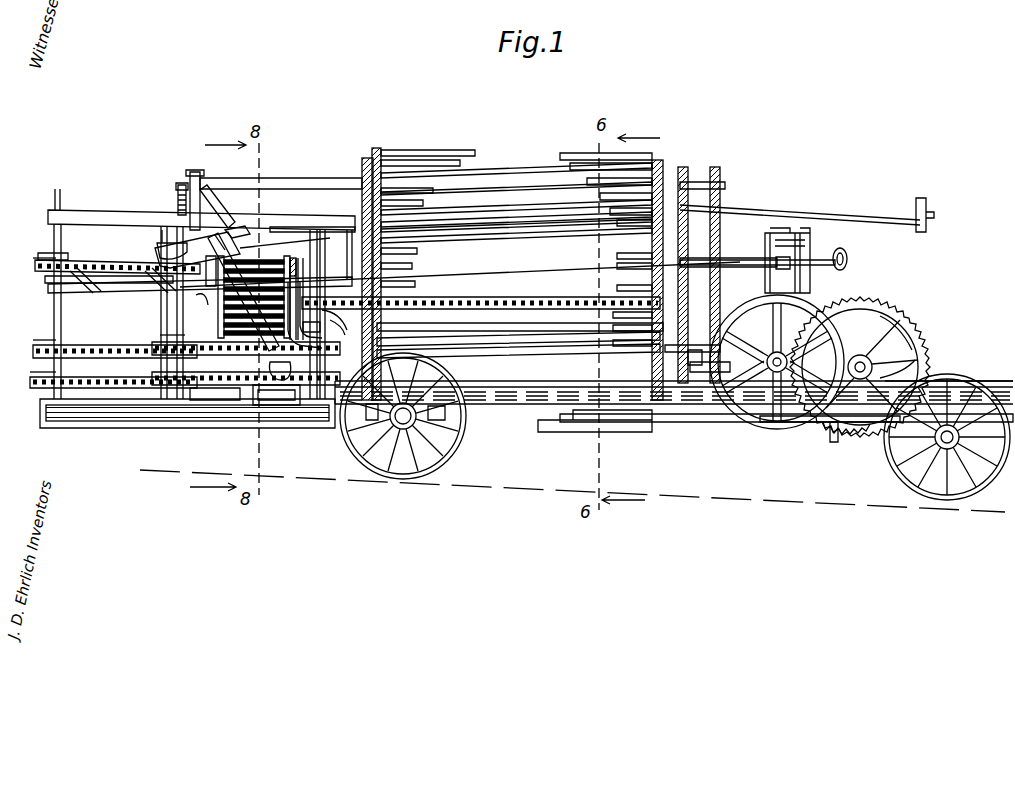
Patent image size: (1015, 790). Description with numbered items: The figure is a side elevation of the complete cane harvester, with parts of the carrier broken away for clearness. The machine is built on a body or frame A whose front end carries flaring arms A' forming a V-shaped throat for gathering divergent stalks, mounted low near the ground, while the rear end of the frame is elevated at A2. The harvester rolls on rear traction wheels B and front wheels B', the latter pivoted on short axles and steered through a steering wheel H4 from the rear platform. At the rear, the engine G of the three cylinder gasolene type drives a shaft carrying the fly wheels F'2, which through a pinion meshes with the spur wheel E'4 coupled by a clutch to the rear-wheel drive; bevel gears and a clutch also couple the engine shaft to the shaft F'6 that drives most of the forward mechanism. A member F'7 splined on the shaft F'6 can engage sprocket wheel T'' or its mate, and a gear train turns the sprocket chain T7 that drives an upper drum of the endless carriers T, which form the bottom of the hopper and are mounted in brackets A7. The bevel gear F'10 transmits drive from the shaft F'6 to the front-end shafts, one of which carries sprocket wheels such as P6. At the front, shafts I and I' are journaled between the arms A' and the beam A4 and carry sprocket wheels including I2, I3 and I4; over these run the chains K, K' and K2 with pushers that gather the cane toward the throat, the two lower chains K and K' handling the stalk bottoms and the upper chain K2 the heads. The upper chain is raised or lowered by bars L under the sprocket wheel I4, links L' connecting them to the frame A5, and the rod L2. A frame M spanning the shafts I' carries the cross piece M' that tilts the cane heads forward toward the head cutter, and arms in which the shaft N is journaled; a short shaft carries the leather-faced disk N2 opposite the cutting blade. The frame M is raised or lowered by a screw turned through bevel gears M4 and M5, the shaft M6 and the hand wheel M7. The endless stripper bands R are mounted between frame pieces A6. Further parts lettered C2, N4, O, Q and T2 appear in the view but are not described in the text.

The frame A is at (674, 416).
The flaring arms A' is at (187, 425).
The elevated rear end of frame A2 is at (990, 380).
The beam A4 is at (75, 212).
The frame A5 is at (122, 294).
The frame pieces A6 is at (302, 268).
The brackets A7 is at (362, 180).
The rear traction wheels B is at (936, 437).
The front wheels B' is at (418, 416).
The shaft eye C2 is at (776, 257).
The spur wheel E'4 is at (860, 357).
The fly wheels F'2 is at (782, 402).
The shaft F'6 is at (518, 341).
The splined clutch member F'7 is at (774, 373).
The bevel gear F'10 is at (520, 323).
The engine G is at (783, 240).
The steering wheel H4 is at (830, 442).
The shaft I is at (40, 276).
The shaft I' is at (165, 330).
The sprocket wheel I2 is at (44, 376).
The sprocket wheel I3 is at (50, 344).
The sprocket wheel I4 is at (50, 258).
The chain K is at (185, 412).
The chain K' is at (186, 340).
The upper chain K2 is at (110, 270).
The bars L is at (109, 301).
The links L' is at (123, 282).
The rod L2 is at (503, 272).
The frame M is at (197, 250).
The cross piece M' is at (163, 227).
The bevel gear M4 is at (190, 170).
The bevel gear M5 is at (210, 191).
The shaft M6 is at (510, 193).
The hand wheel M7 is at (925, 206).
The shaft N is at (262, 266).
The disk N2 is at (252, 215).
The block N4 is at (298, 408).
The pipe O is at (280, 405).
The sprocket wheel P6 is at (408, 300).
The roller Q is at (257, 368).
The endless bands R is at (290, 225).
The endless carriers T is at (517, 278).
The sprocket wheel T'' is at (718, 269).
The post T2 is at (682, 177).
The sprocket chain T7 is at (714, 248).